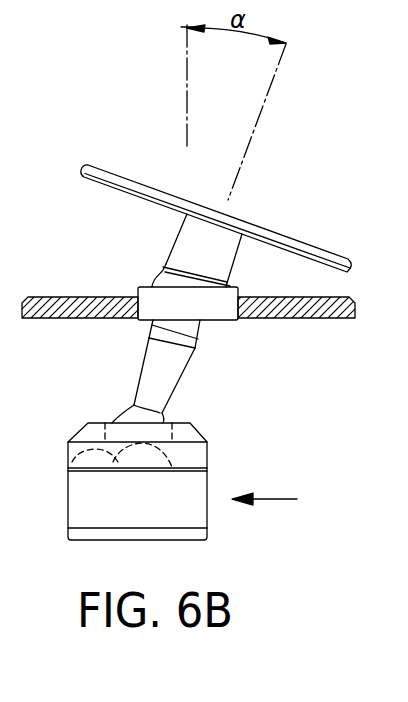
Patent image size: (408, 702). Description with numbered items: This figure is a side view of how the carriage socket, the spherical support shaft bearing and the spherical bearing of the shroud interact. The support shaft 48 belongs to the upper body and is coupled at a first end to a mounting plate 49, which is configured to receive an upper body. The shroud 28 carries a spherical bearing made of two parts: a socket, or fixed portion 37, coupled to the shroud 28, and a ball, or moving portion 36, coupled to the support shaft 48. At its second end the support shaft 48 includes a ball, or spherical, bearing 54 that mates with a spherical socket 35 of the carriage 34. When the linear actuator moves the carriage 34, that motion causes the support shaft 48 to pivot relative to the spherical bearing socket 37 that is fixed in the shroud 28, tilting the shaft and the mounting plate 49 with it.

The shroud 28 is at (55, 297).
The carriage 34 is at (208, 462).
The carriage socket 35 is at (66, 461).
The ball of the spherical bearing 36 is at (213, 331).
The socket of the spherical bearing 37 is at (137, 286).
The support shaft 48 is at (177, 382).
The mounting plate 49 is at (291, 241).
The support shaft bearing 54 is at (124, 414).